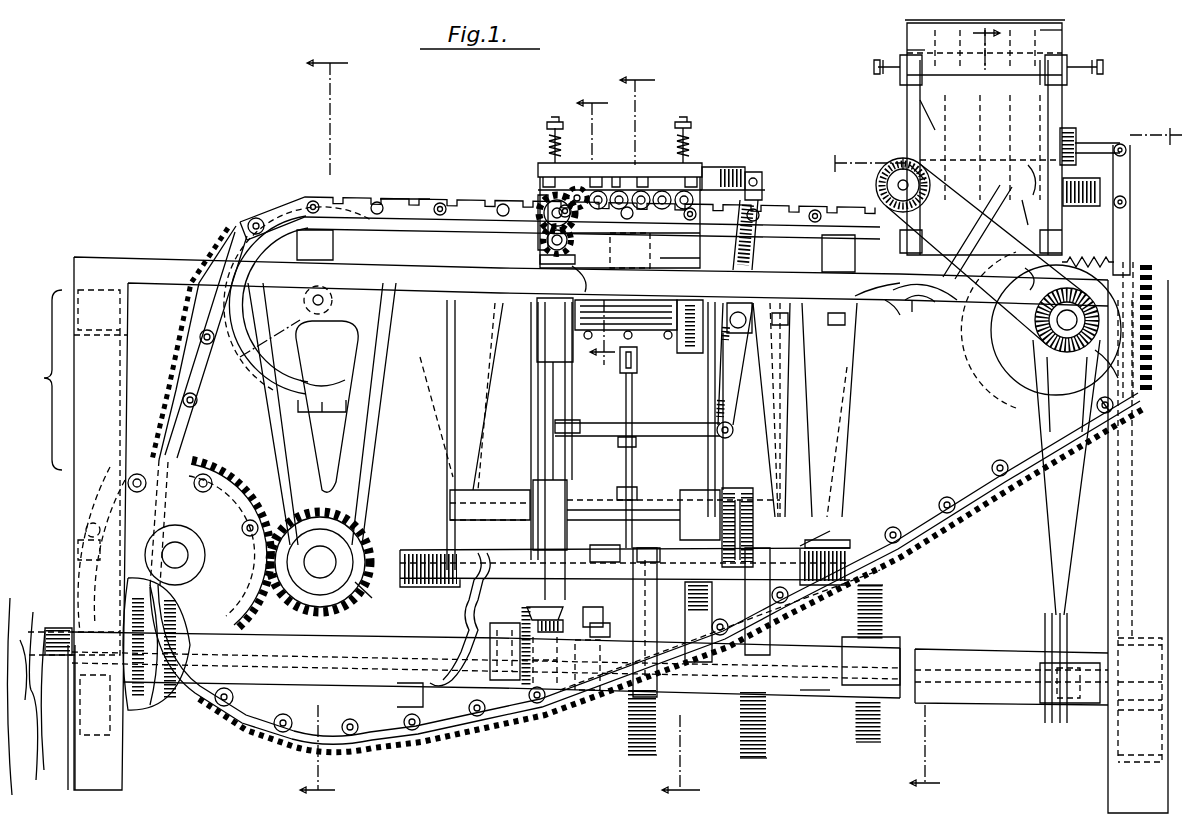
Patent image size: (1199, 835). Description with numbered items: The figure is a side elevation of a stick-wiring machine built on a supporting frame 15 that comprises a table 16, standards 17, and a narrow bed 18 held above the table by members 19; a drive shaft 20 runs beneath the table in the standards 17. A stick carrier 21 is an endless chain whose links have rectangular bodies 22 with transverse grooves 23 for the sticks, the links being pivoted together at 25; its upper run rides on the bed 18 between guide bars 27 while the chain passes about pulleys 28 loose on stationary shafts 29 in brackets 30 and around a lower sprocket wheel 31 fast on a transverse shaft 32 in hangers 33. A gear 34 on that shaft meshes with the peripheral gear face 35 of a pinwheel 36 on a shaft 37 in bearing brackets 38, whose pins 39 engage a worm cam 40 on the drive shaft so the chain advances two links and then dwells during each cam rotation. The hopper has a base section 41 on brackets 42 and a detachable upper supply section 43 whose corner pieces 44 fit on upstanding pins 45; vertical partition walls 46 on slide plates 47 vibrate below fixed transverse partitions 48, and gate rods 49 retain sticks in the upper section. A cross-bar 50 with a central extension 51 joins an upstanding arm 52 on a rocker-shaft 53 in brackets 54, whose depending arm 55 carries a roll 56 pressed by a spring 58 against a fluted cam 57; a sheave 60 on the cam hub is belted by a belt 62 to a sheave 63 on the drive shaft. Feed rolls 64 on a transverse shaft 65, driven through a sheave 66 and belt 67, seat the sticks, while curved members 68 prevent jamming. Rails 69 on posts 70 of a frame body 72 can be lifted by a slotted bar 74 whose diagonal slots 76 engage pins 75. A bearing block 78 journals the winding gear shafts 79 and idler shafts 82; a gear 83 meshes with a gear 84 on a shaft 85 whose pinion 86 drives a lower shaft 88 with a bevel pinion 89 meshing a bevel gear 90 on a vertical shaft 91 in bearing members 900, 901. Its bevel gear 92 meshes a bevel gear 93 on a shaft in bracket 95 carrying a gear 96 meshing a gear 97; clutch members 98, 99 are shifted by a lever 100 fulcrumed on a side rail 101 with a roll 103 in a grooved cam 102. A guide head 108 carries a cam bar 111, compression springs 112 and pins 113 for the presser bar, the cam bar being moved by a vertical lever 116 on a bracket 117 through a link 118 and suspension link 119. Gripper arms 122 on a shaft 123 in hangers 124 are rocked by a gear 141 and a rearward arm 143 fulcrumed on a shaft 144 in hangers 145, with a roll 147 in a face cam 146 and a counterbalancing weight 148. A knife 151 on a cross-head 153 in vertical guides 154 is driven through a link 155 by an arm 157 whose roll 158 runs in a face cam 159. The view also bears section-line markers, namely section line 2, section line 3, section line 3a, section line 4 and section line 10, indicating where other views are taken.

The supporting frame 15 is at (42, 380).
The table 16 is at (88, 262).
The standards 17 is at (624, 546).
The bed 18 is at (405, 196).
The members 19 is at (967, 339).
The drive shaft 20 is at (387, 640).
The stick feeding and supporting element 21 is at (296, 198).
The rectangular body 22 is at (272, 210).
The transverse grooves 23 is at (453, 196).
The pivotal connection 25 is at (254, 220).
The guide bars 27 is at (350, 212).
The pulleys 28 is at (684, 405).
The stationary shafts 29 is at (330, 296).
The brackets 30 is at (1008, 338).
The lower sprocket wheel 31 is at (328, 412).
The transverse shaft 32 is at (320, 562).
The hangers 33 is at (282, 387).
The gear 34 is at (365, 586).
The peripheral gear face 35 is at (262, 648).
The pinwheel 36 is at (80, 507).
The shaft 37 is at (183, 552).
The bearing brackets 38 is at (76, 549).
The pins 39 is at (226, 459).
The worm cam 40 is at (155, 665).
The base section 41 is at (981, 139).
The brackets 42 is at (900, 85).
The upper supply section 43 is at (907, 26).
The corner pieces 44 is at (876, 69).
The upstanding pins 45 is at (905, 53).
The vertical partition walls 46 is at (1047, 69).
The slide plates 47 is at (933, 128).
The fixed transverse partitions 48 is at (1062, 31).
The rods 49 is at (880, 67).
The cross-bar 50 is at (1073, 128).
The central extension 51 is at (1088, 147).
The upstanding arm 52 is at (1127, 151).
The rocker-shaft 53 is at (1130, 201).
The brackets 54 is at (1085, 193).
The depending arm 55 is at (1128, 207).
The roll 56 is at (1118, 356).
The cam 57 is at (1097, 410).
The spring 58 is at (1112, 251).
The sheave 60 is at (1037, 337).
The belt 62 is at (1052, 567).
The sheave 63 is at (1045, 623).
The feed rolls 64 is at (900, 161).
The transverse shaft 65 is at (898, 187).
The sheave 66 is at (893, 168).
The belt 67 is at (935, 313).
The curved members 68 is at (915, 169).
The rails 69 is at (1026, 201).
The posts 70 is at (943, 223).
The body 72 is at (960, 251).
The bar 74 is at (920, 303).
The pins 75 is at (890, 303).
The slots 76 is at (927, 293).
The bearing block 78 is at (685, 261).
The shafts 79 is at (641, 192).
The shafts 82 is at (540, 263).
The gear 83 is at (588, 192).
The gear 84 is at (553, 190).
The shaft 85 is at (577, 187).
The pinion 86 is at (543, 190).
The lower shaft 88 is at (572, 244).
The bevel pinion 89 is at (580, 234).
The bevel gear 90 is at (575, 268).
The vertical shaft 91 is at (540, 403).
The bevel gear 92 is at (522, 605).
The bevel gear 93 is at (516, 682).
The bracket 95 is at (1128, 642).
The gear 96 is at (885, 614).
The gear 97 is at (867, 745).
The clutch member 98 is at (532, 690).
The sliding complementary member 99 is at (565, 690).
The lever 100 is at (558, 612).
The side rail 101 is at (462, 676).
The cam 102 is at (585, 692).
The roll 103 is at (602, 616).
The guide head 108 is at (702, 167).
The cam bar 111 is at (735, 175).
The compression springs 112 is at (688, 134).
The pins 113 is at (687, 125).
The vertical lever 116 is at (758, 176).
The bracket 117 is at (746, 318).
The link 118 is at (660, 425).
The suspension link 119 is at (563, 415).
The radial arms 122 is at (703, 461).
The longitudinal shaft 123 is at (657, 508).
The hangers 124 is at (428, 379).
The gear 141 is at (739, 486).
The rearward arm 143 is at (800, 521).
The shaft 144 is at (480, 566).
The hangers 145 is at (473, 448).
The face cam 146 is at (760, 760).
The roll 147 is at (802, 545).
The weight 148 is at (703, 672).
The knife 151 is at (626, 319).
The cross-head 153 is at (650, 344).
The vertical guides 154 is at (683, 332).
The link 155 is at (634, 384).
The arm 157 is at (625, 562).
The roll 158 is at (655, 562).
The face cam 159 is at (640, 758).
The bearing member 900 is at (533, 328).
The bearing member 901 is at (522, 511).
The section line 2 is at (660, 423).
The section line 3 is at (956, 419).
The section line 3a is at (1000, 144).
The section line 4 is at (324, 414).
The section line 10 is at (595, 225).